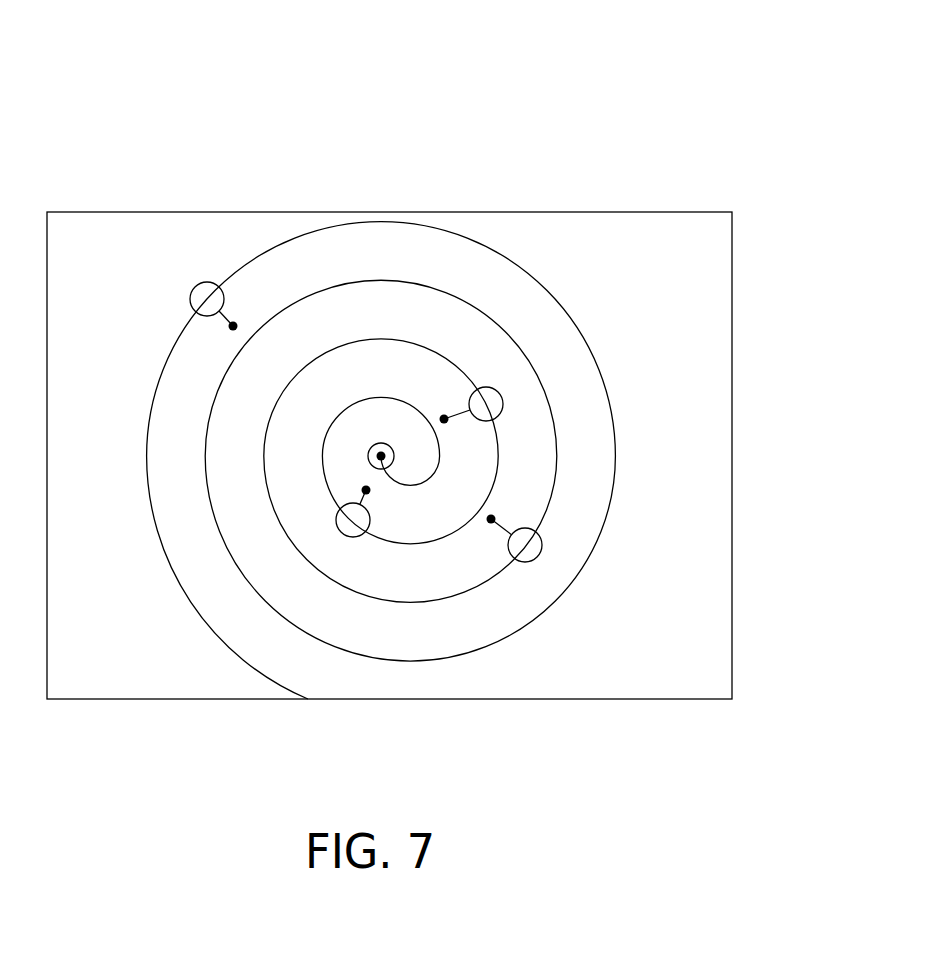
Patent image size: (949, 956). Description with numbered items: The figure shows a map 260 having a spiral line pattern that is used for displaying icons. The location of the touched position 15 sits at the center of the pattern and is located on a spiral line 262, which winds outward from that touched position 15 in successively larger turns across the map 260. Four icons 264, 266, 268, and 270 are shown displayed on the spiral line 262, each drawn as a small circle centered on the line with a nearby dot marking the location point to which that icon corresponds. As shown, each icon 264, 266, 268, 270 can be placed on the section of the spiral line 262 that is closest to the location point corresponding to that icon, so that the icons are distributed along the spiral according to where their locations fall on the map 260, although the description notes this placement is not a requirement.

The map 260 is at (778, 122).
The spiral line 262 is at (613, 455).
The touched position 15 is at (376, 445).
The icon 264 is at (503, 401).
The icon 266 is at (538, 557).
The icon 268 is at (350, 542).
The icon 270 is at (195, 283).